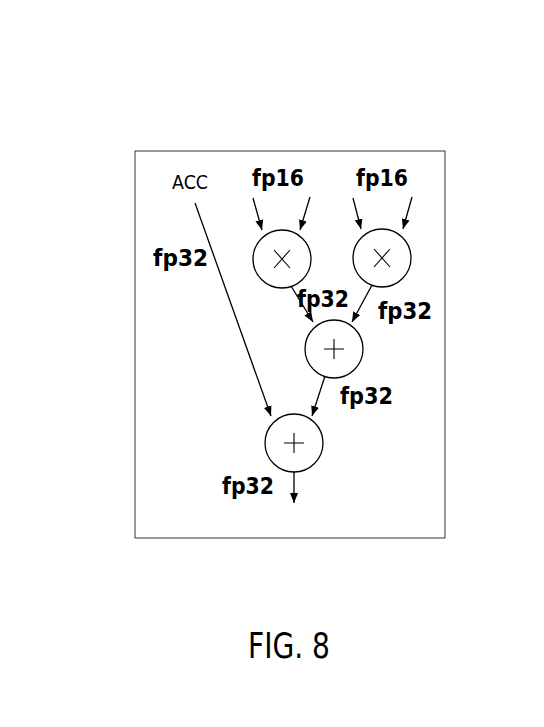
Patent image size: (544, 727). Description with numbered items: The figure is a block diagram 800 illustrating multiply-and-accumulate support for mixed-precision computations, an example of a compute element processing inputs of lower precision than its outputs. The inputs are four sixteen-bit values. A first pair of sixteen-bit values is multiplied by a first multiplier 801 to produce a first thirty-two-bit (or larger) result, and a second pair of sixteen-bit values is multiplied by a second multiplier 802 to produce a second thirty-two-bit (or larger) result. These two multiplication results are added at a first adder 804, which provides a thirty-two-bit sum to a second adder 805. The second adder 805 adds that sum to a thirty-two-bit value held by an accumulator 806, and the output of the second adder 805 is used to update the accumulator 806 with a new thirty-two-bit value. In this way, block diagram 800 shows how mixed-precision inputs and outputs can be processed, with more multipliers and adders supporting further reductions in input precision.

The block diagram 800 is at (307, 110).
The first multiplier 801 is at (255, 254).
The second multiplier 802 is at (410, 255).
The first adder 804 is at (361, 349).
The second adder 805 is at (322, 453).
The accumulator 806 is at (312, 522).